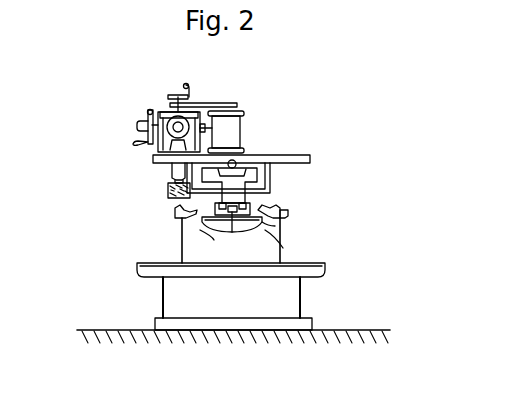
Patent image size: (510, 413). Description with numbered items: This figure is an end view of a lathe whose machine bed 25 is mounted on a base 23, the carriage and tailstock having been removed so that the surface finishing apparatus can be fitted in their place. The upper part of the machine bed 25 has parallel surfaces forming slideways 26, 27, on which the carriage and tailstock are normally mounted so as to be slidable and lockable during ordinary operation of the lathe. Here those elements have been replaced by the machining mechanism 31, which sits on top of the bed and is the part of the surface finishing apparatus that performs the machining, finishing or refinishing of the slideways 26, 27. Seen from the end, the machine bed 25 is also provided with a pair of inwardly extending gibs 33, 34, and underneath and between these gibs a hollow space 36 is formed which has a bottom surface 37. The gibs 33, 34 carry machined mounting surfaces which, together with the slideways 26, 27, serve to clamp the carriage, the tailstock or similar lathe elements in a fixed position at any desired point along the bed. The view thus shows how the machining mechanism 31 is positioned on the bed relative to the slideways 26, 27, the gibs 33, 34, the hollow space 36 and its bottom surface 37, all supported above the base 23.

The base 23 is at (292, 293).
The machine bed 25 is at (262, 226).
The slideway 26 is at (177, 207).
The slideway 27 is at (277, 204).
The machining mechanism 31 is at (253, 106).
The gib 33 is at (203, 217).
The gib 34 is at (283, 221).
The hollow space 36 is at (283, 248).
The bottom surface 37 is at (215, 227).